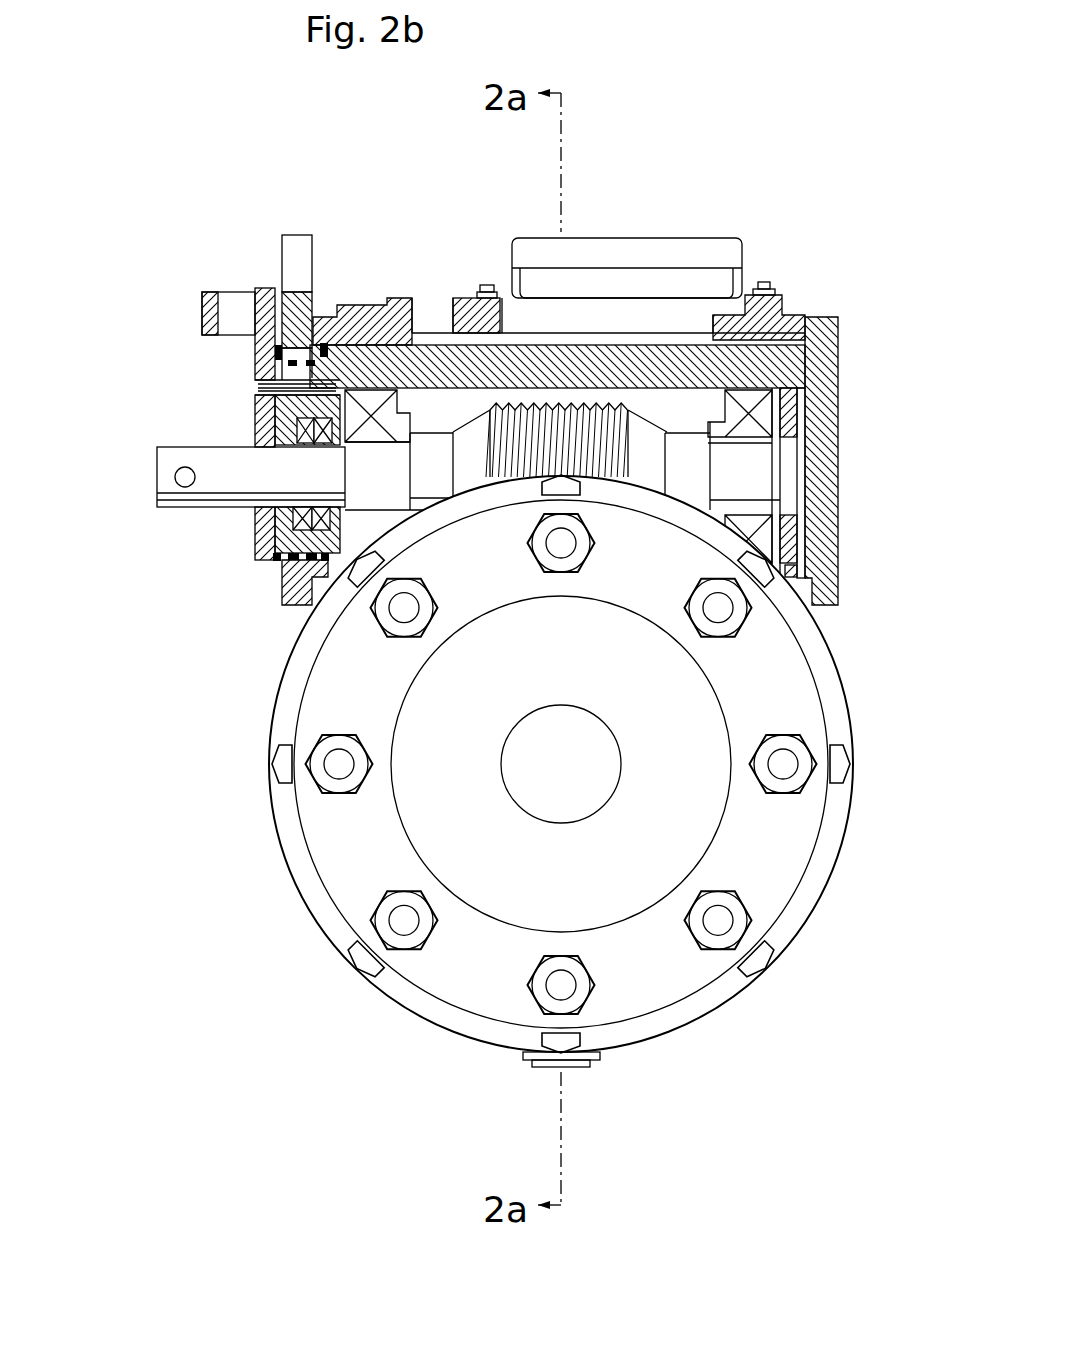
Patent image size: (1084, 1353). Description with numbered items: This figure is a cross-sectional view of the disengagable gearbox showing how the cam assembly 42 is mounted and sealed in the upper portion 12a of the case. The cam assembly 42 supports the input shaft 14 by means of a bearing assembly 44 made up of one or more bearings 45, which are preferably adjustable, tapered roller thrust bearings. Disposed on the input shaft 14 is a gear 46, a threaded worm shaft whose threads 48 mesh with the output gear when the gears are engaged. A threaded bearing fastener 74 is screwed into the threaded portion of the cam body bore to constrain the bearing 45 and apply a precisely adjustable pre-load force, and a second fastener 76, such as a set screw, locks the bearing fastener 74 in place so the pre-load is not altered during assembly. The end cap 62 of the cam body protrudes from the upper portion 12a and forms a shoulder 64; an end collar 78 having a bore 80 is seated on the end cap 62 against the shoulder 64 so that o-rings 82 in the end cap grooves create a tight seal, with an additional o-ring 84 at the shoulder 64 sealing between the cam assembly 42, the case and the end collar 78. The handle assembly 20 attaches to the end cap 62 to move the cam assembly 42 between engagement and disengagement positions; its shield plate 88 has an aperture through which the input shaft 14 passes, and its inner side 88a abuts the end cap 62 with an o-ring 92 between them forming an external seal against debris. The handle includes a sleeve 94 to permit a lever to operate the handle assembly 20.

The upper portion of case 12a is at (782, 304).
The input shaft 14 is at (168, 487).
The handle assembly 20 is at (186, 316).
The cam assembly 42 is at (768, 362).
The bearing assembly 44 is at (414, 400).
The bearing 45 is at (763, 415).
The gear 46 is at (632, 400).
The threads 48 is at (582, 400).
The end cap 62 is at (262, 535).
The shoulder 64 is at (324, 345).
The threaded bearing fastener 74 is at (790, 545).
The second fastener 76 is at (803, 572).
The end collar 78 is at (306, 298).
The bore 80 is at (262, 552).
The o-ring 82 is at (298, 386).
The o-ring 84 is at (322, 320).
The shield plate 88 is at (257, 408).
The inner side of shield plate 88a is at (302, 300).
The o-ring 92 is at (276, 352).
The sleeve 94 is at (238, 292).